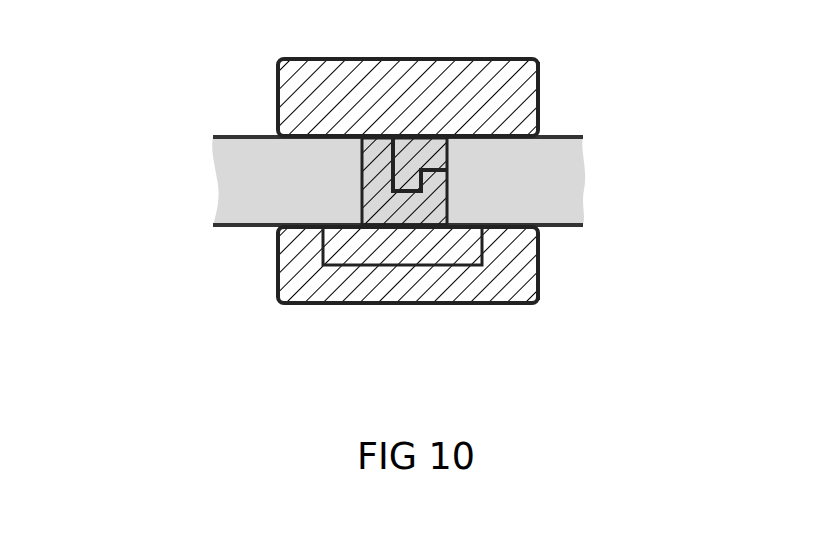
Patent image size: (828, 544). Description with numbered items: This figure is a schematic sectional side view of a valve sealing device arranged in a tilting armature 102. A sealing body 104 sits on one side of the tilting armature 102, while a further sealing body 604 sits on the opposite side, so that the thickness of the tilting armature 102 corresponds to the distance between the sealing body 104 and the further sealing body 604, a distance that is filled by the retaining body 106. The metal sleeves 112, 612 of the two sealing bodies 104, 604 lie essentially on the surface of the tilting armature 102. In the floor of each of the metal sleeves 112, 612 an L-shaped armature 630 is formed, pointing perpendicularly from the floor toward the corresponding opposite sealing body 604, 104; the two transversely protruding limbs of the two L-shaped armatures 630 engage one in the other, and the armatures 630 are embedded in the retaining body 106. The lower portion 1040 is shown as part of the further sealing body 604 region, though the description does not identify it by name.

The tilting armature 102 is at (572, 145).
The sealing body 104 is at (293, 103).
The retaining body 106 is at (358, 174).
The metal sleeve 112 is at (540, 66).
The further sealing body 604 is at (323, 255).
The metal sleeve 612 is at (540, 275).
The L-shaped armature 630 is at (447, 149).
The lower body 1040 is at (323, 268).